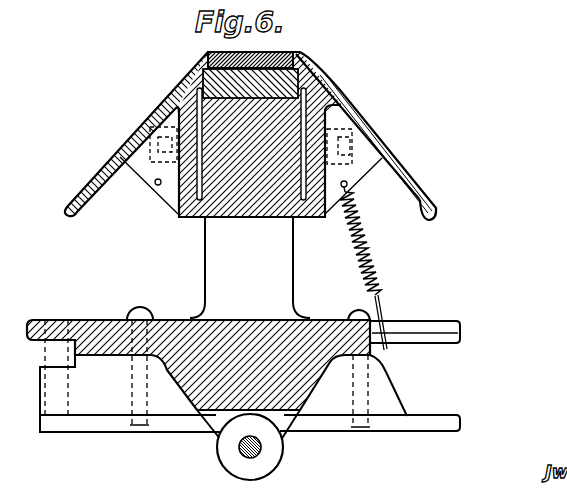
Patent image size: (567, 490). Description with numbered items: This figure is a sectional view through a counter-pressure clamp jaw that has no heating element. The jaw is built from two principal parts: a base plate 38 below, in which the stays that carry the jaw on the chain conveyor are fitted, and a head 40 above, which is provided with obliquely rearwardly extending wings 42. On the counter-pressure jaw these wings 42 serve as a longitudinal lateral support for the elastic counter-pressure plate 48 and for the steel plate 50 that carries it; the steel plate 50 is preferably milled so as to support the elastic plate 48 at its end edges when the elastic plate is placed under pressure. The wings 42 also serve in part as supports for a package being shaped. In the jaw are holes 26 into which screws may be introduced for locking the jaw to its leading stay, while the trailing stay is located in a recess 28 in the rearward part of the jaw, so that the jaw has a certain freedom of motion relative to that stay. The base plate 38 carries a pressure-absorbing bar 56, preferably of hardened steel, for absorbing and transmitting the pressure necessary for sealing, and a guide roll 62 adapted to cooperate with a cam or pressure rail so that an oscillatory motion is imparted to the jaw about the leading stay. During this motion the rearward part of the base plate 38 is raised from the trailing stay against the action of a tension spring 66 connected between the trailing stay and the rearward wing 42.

The elastic counter-pressure plate 48 is at (280, 54).
The steel plate 50 is at (215, 80).
The head 40 is at (285, 110).
The wings 42 is at (127, 141).
The tension springs 66 is at (372, 262).
The holes 26 is at (62, 318).
The base plate 38 is at (320, 312).
The recess 28 is at (423, 379).
The pressure-absorbing bars 56 is at (87, 428).
The guide rolls 62 is at (215, 453).